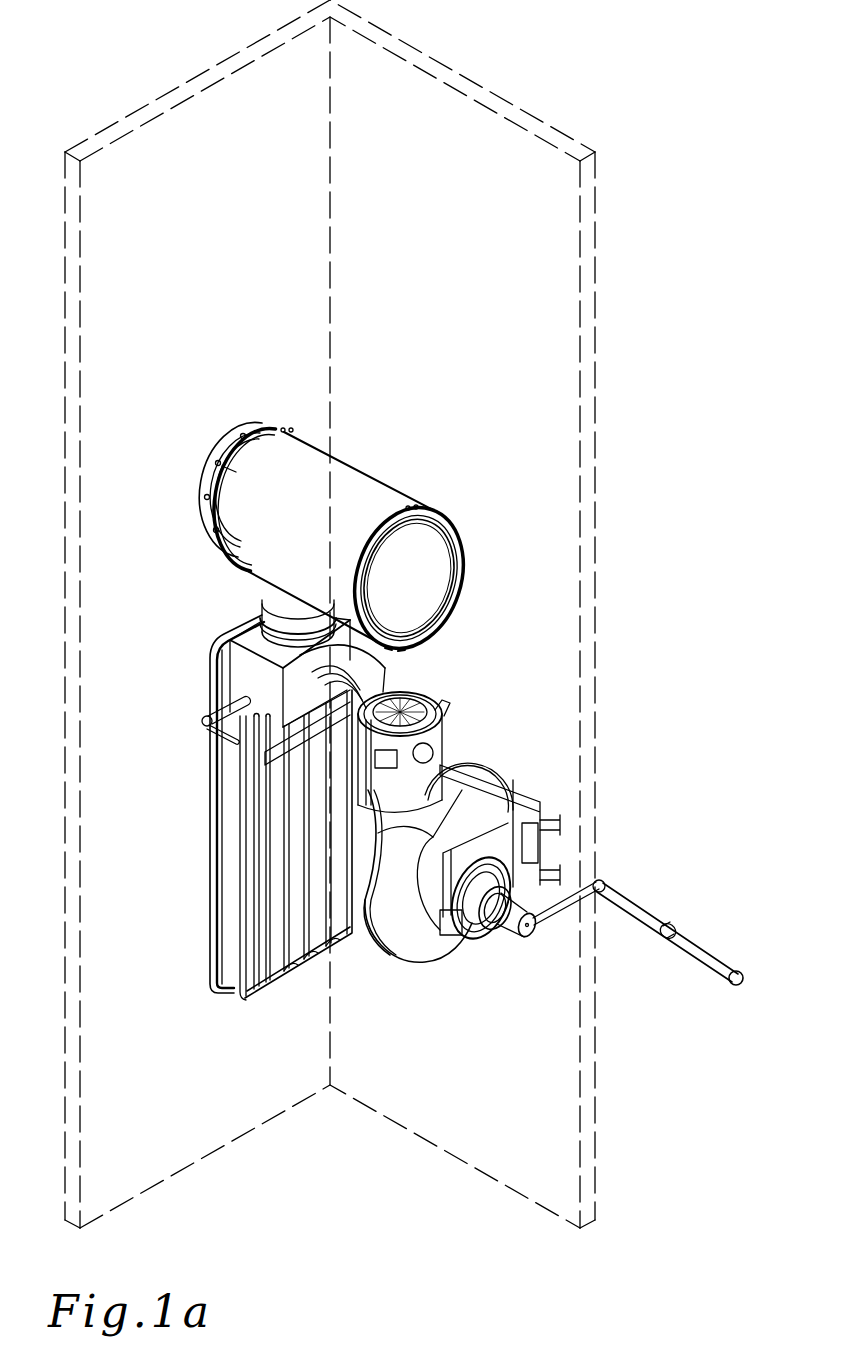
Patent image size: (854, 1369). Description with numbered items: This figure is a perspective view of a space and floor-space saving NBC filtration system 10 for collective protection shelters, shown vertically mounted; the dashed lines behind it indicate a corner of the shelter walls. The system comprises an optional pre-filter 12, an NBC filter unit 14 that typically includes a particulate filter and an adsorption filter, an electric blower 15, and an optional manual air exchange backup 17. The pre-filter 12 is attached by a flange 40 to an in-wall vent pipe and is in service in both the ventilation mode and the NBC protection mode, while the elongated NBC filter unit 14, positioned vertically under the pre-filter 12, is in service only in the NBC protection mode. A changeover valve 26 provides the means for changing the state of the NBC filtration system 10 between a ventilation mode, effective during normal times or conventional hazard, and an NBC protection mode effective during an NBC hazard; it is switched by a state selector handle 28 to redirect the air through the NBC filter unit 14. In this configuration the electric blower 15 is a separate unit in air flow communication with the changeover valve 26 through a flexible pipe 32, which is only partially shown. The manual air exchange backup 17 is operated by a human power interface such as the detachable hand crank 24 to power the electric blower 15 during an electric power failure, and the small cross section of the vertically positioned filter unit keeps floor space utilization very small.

The NBC filtration system 10 is at (617, 577).
The pre-filter 12 is at (373, 473).
The NBC filter unit 14 is at (230, 827).
The electric blower 15 is at (410, 947).
The manual air exchange backup 17 is at (503, 927).
The detachable hand crank 24 is at (647, 912).
The changeover valve 26 is at (225, 637).
The state selector handle 28 is at (207, 722).
The flexible pipe 32 is at (390, 678).
The flange 40 is at (252, 425).